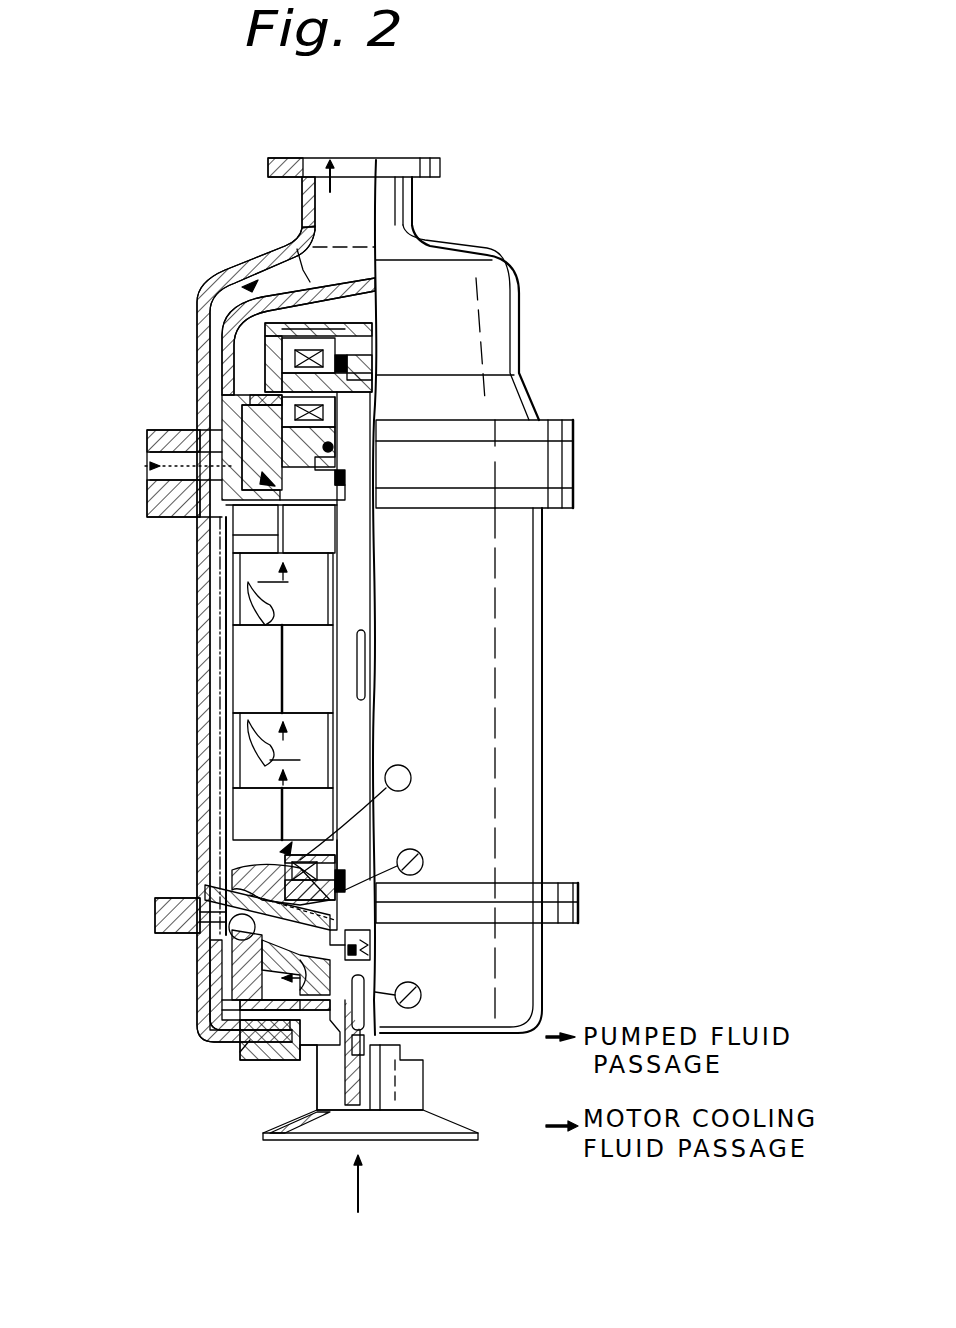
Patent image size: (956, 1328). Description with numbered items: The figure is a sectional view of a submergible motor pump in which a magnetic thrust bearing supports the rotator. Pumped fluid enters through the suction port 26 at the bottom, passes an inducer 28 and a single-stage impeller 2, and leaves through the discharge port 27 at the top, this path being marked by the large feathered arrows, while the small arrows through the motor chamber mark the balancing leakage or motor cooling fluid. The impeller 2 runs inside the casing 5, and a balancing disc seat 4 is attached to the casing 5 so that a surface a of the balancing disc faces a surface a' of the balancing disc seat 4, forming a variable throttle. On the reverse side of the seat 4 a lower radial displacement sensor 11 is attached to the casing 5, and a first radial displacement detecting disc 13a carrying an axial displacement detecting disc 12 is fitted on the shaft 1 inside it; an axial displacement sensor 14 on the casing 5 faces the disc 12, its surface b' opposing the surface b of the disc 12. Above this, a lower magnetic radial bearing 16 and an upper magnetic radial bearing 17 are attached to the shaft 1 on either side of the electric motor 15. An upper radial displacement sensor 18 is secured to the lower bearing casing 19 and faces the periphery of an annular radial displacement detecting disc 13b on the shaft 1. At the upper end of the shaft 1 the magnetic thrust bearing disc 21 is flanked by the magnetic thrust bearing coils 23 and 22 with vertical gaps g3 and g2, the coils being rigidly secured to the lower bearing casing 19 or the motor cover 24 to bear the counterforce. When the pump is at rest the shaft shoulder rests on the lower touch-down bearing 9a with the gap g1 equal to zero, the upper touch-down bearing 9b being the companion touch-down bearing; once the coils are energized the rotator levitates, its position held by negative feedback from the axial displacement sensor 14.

The shaft 1 is at (380, 946).
The single-stage impeller 2 is at (285, 1052).
The balancing disc seat 4 is at (215, 1000).
The casing 5 is at (262, 995).
The lower touch-down bearing 9a is at (160, 925).
The upper touch-down bearing 9b is at (245, 432).
The lower radial displacement sensor 11 is at (240, 892).
The axial displacement detecting disc 12 is at (250, 880).
The first radial displacement detecting disc 13a is at (390, 895).
The annular radial displacement detecting disc 13b is at (376, 500).
The axial displacement sensor 14 is at (300, 870).
The electric motor 15 is at (270, 655).
The lower magnetic radial bearing 16 is at (280, 805).
The upper magnetic radial bearing 17 is at (265, 535).
The upper radial displacement sensor 18 is at (150, 480).
The lower bearing casing 19 is at (150, 452).
The magnetic thrust bearing disc 21 is at (290, 352).
The magnetic thrust bearing coil 22 is at (250, 398).
The magnetic thrust bearing coil 23 is at (240, 300).
The motor cover 24 is at (215, 272).
The suction port 26 is at (388, 1143).
The discharge port 27 is at (382, 155).
The inducer 28 is at (335, 1092).
The gap g1 is at (350, 1008).
The vertical gap g2 is at (275, 366).
The vertical gap g3 is at (365, 372).
The surface of the balancing disc a is at (242, 927).
The surface of the balancing disc seat a' is at (398, 995).
The surface of the displacement detecting disc b is at (355, 812).
The surface of the axial displacement sensor b' is at (384, 869).